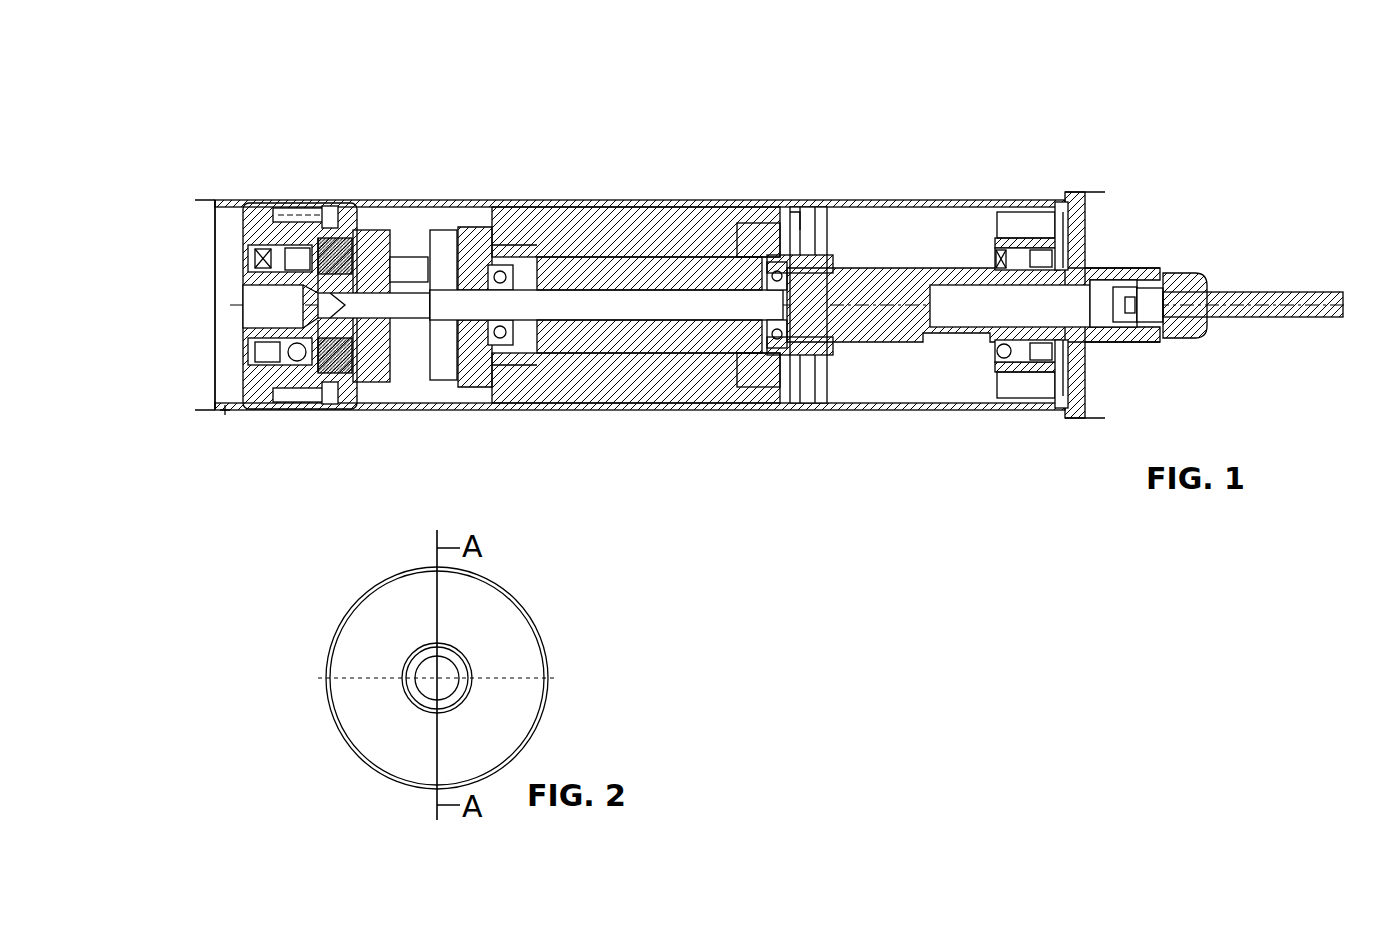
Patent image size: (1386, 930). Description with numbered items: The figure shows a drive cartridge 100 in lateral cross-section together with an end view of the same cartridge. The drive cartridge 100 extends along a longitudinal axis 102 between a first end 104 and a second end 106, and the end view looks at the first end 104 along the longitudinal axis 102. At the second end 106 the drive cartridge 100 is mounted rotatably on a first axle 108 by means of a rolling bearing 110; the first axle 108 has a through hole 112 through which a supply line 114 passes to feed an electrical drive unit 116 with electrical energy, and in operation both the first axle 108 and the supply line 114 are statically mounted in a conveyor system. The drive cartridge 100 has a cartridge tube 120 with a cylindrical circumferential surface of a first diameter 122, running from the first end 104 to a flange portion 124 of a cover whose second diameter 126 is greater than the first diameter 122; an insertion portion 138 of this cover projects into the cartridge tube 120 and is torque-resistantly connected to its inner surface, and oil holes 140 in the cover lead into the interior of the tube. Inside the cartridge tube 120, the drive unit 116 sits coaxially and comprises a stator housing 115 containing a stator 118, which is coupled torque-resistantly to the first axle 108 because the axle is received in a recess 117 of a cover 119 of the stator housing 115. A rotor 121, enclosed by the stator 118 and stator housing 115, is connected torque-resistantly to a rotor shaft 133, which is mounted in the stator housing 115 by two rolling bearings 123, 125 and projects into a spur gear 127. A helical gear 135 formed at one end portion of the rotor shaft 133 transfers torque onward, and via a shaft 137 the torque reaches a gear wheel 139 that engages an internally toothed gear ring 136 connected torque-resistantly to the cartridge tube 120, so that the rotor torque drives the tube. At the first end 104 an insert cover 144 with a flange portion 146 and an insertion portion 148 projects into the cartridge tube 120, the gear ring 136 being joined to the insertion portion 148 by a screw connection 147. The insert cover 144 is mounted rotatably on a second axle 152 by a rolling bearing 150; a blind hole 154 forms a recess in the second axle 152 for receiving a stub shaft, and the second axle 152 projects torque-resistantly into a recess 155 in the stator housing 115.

In FIG. 1, the drive cartridge 100 is at (877, 433).
In FIG. 2, the drive cartridge 100 is at (562, 607).
In FIG. 1, the longitudinal axis 102 is at (703, 305).
In FIG. 1, the first end 104 is at (226, 412).
In FIG. 2, the first end 104 is at (520, 665).
In FIG. 1, the second end 106 is at (1137, 342).
In FIG. 1, the first axle 108 is at (1072, 353).
In FIG. 1, the rolling bearing 110 is at (993, 252).
In FIG. 1, the through hole 112 is at (1222, 310).
In FIG. 1, the supply line 114 is at (1297, 290).
In FIG. 1, the stator housing 115 is at (762, 200).
In FIG. 1, the electrical drive unit 116 is at (602, 380).
In FIG. 1, the recess 117 is at (829, 312).
In FIG. 1, the stator 118 is at (575, 235).
In FIG. 1, the cover 119 is at (810, 365).
In FIG. 1, the cartridge tube 120 is at (852, 200).
In FIG. 1, the rotor 121 is at (640, 275).
In FIG. 1, the first diameter 122 is at (213, 368).
In FIG. 1, the rolling bearing 123 is at (465, 230).
In FIG. 1, the flange portion 124 is at (1105, 192).
In FIG. 1, the rolling bearing 125 is at (799, 215).
In FIG. 1, the second diameter 126 is at (1087, 385).
In FIG. 1, the spur gear 127 is at (424, 358).
In FIG. 1, the rotor shaft 133 is at (527, 313).
In FIG. 1, the helical gear 135 is at (420, 400).
In FIG. 1, the internally toothed gear ring 136 is at (340, 400).
In FIG. 1, the shaft 137 is at (410, 200).
In FIG. 1, the insertion portion 138 is at (1022, 220).
In FIG. 1, the gear wheel 139 is at (330, 200).
In FIG. 1, the oil holes 140 is at (1012, 230).
In FIG. 1, the insert cover 144 is at (235, 200).
In FIG. 1, the flange portion 146 is at (247, 200).
In FIG. 1, the screw connection 147 is at (333, 392).
In FIG. 1, the insertion portion 148 is at (273, 200).
In FIG. 1, the rolling bearing 150 is at (290, 370).
In FIG. 1, the second axle 152 is at (243, 333).
In FIG. 1, the blind hole 154 is at (300, 305).
In FIG. 2, the blind hole 154 is at (430, 668).
In FIG. 1, the recess 155 is at (343, 312).